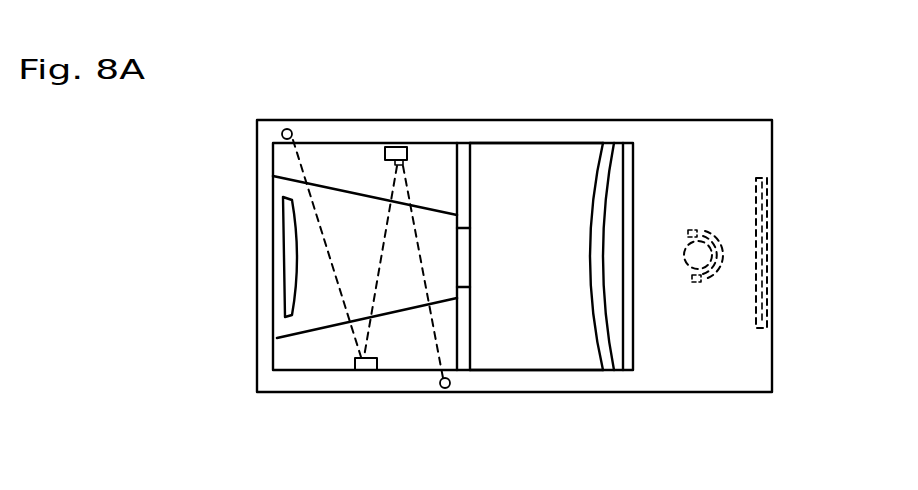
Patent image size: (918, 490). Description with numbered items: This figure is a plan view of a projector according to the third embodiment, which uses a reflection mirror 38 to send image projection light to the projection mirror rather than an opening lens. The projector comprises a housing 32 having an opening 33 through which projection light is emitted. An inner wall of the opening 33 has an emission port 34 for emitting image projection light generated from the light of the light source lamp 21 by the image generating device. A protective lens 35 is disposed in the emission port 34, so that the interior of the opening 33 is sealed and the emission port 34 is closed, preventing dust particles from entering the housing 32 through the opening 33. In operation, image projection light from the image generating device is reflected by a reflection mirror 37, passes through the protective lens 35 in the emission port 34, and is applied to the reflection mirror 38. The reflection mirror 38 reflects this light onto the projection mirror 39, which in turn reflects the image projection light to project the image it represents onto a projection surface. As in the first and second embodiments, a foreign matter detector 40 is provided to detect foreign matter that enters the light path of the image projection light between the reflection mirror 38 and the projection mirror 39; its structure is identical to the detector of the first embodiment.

The light source lamp 21 is at (715, 283).
The housing 32 is at (772, 141).
The opening 33 is at (533, 369).
The emission port 34 is at (468, 230).
The protective lens 35 is at (472, 250).
The reflection mirror 37 is at (774, 184).
The reflection mirror 38 is at (300, 280).
The projection mirror 39 is at (613, 148).
The foreign matter detector 40 is at (350, 133).